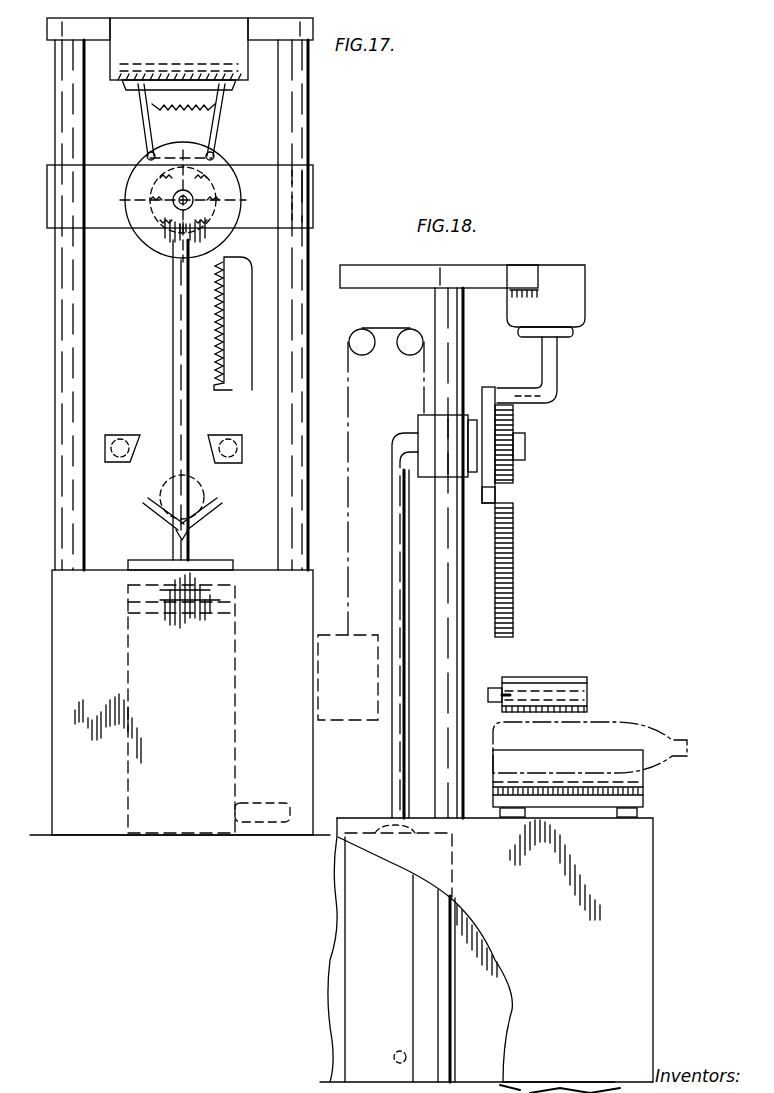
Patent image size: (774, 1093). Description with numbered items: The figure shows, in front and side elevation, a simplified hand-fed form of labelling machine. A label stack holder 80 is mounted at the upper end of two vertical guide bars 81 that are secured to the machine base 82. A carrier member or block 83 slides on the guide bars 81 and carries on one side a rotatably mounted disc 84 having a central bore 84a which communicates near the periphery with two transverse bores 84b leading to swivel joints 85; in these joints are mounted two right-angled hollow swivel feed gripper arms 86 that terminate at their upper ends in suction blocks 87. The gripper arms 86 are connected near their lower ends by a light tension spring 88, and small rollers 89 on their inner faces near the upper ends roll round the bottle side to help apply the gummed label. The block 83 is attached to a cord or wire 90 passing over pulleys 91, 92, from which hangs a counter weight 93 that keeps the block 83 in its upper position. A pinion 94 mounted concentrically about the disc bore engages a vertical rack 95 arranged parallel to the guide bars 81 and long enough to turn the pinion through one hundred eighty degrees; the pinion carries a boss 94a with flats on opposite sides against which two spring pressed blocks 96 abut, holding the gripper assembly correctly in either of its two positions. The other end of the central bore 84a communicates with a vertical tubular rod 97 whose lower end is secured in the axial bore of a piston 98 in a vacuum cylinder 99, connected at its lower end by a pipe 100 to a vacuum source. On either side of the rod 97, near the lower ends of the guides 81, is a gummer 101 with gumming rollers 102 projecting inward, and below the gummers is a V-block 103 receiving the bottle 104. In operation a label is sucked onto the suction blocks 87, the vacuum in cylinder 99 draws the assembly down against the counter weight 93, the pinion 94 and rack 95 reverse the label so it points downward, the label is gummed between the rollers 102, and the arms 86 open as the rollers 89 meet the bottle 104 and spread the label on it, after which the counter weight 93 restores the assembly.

In FIG. 17, the label stack holder 80 is at (168, 76).
In FIG. 18, the label stack holder 80 is at (575, 282).
In FIG. 17, the vertical guide bars 81 is at (72, 362).
In FIG. 18, the vertical guide bars 81 is at (450, 596).
In FIG. 17, the machine base 82 is at (300, 577).
In FIG. 18, the machine base 82 is at (640, 826).
In FIG. 17, the carrier member or block 83 is at (290, 198).
In FIG. 18, the carrier member or block 83 is at (420, 417).
In FIG. 17, the disc 84 is at (147, 232).
In FIG. 18, the disc 84 is at (498, 493).
In FIG. 17, the central bore 84a is at (218, 214).
In FIG. 17, the transverse bores 84b is at (215, 160).
In FIG. 18, the swivel joints 85 is at (490, 396).
In FIG. 17, the swivel feed gripper arms 86 is at (143, 118).
In FIG. 18, the swivel feed gripper arms 86 is at (558, 385).
In FIG. 17, the suction blocks 87 is at (180, 87).
In FIG. 18, the suction blocks 87 is at (568, 337).
In FIG. 17, the light tension spring 88 is at (148, 143).
In FIG. 17, the small rollers 89 is at (183, 101).
In FIG. 18, the cord or wire 90 is at (348, 455).
In FIG. 18, the pulley 91 is at (410, 338).
In FIG. 18, the pulley 92 is at (362, 338).
In FIG. 18, the counter weight 93 is at (350, 645).
In FIG. 17, the pinion 94 is at (205, 228).
In FIG. 18, the pinion 94 is at (514, 470).
In FIG. 17, the boss 94a is at (160, 192).
In FIG. 18, the boss 94a is at (526, 443).
In FIG. 17, the vertical rack 95 is at (240, 385).
In FIG. 18, the vertical rack 95 is at (515, 550).
In FIG. 17, the spring pressed blocks 96 is at (216, 195).
In FIG. 17, the vertical tubular rod 97 is at (180, 372).
In FIG. 18, the vertical tubular rod 97 is at (400, 528).
In FIG. 17, the piston 98 is at (225, 608).
In FIG. 17, the vacuum cylinder 99 is at (210, 692).
In FIG. 18, the vacuum cylinder 99 is at (425, 1005).
In FIG. 17, the pipe 100 is at (262, 799).
In FIG. 17, the gummer 101 is at (120, 456).
In FIG. 18, the gummer 101 is at (585, 683).
In FIG. 17, the gumming rollers 102 is at (134, 437).
In FIG. 18, the gumming rollers 102 is at (534, 680).
In FIG. 17, the V-block 103 is at (168, 522).
In FIG. 18, the V-block 103 is at (622, 760).
In FIG. 17, the bottle 104 is at (170, 490).
In FIG. 18, the bottle 104 is at (586, 730).